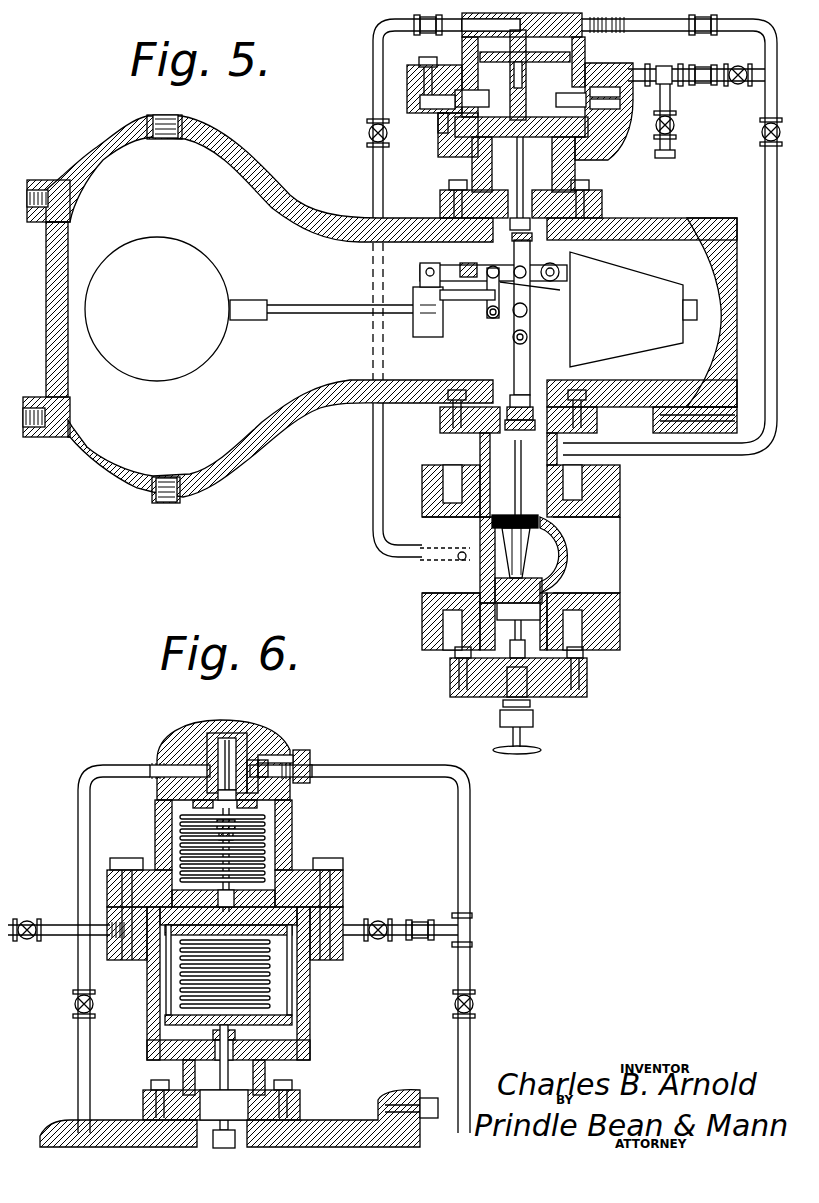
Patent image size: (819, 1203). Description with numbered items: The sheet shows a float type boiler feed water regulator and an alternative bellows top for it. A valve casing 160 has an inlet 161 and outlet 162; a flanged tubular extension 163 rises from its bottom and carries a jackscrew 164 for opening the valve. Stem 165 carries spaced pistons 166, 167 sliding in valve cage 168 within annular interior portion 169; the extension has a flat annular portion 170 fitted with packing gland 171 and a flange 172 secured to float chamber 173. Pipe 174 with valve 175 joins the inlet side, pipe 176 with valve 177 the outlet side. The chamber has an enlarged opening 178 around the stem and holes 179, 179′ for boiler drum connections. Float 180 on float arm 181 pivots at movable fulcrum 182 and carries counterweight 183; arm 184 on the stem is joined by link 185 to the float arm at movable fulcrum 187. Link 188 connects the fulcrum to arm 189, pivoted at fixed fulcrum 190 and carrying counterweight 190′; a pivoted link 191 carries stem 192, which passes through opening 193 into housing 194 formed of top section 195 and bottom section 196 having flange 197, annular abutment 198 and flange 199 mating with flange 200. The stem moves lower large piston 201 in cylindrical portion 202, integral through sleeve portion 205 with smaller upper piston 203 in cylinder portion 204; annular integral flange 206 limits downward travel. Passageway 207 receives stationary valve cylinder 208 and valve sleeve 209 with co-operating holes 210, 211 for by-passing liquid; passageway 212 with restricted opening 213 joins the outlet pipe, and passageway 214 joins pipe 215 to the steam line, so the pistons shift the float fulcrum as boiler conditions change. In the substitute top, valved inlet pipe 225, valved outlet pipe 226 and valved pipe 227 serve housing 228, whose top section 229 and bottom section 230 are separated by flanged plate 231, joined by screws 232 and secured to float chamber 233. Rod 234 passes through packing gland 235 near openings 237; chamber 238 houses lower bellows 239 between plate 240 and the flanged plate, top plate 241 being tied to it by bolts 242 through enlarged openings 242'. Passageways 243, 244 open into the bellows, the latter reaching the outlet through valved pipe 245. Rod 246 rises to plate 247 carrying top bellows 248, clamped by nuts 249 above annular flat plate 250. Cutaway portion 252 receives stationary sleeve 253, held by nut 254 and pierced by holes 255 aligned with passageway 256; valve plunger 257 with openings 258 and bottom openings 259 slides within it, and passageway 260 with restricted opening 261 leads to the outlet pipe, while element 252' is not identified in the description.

In FIG. 5, the valve casing 160 is at (614, 484).
In FIG. 5, the inlet 161 is at (432, 530).
In FIG. 5, the outlet 162 is at (608, 531).
In FIG. 5, the flanged tubular extension 163 is at (480, 452).
In FIG. 5, the jackscrew 164 is at (533, 716).
In FIG. 5, the stem 165 is at (450, 474).
In FIG. 5, the piston 166 is at (515, 342).
In FIG. 5, the piston 167 is at (503, 566).
In FIG. 5, the valve cage 168 is at (530, 592).
In FIG. 5, the annular interior portion 169 is at (568, 551).
In FIG. 5, the flat annular portion 170 is at (522, 462).
In FIG. 5, the packing gland 171 is at (505, 425).
In FIG. 5, the flange 172 is at (505, 414).
In FIG. 5, the float chamber 173 is at (258, 468).
In FIG. 5, the pipe 174 is at (374, 503).
In FIG. 5, the valve 175 is at (366, 133).
In FIG. 5, the pipe 176 is at (668, 25).
In FIG. 5, the valve 177 is at (772, 146).
In FIG. 5, the enlarged opening 178 is at (497, 390).
In FIG. 5, the hole 179 is at (172, 118).
In FIG. 5, the hole 179′ is at (162, 503).
In FIG. 5, the float 180 is at (152, 240).
In FIG. 5, the float arm 181 is at (303, 316).
In FIG. 5, the movable fulcrum 182 is at (485, 318).
In FIG. 5, the counterweight 183 is at (640, 280).
In FIG. 5, the arm 184 is at (530, 355).
In FIG. 5, the link 185 is at (530, 323).
In FIG. 5, the movable fulcrum 187 is at (491, 266).
In FIG. 5, the link 188 is at (490, 292).
In FIG. 5, the arm 189 is at (450, 266).
In FIG. 5, the fixed fulcrum 190 is at (560, 282).
In FIG. 5, the counterweight 190′ is at (420, 330).
In FIG. 5, the pivoted link 191 is at (562, 270).
In FIG. 5, the stem 192 is at (517, 156).
In FIG. 5, the opening 193 is at (516, 230).
In FIG. 5, the housing 194 is at (612, 160).
In FIG. 5, the top section 195 is at (392, 27).
In FIG. 5, the bottom section 196 is at (440, 118).
In FIG. 5, the flange 197 is at (442, 200).
In FIG. 5, the annular abutment 198 is at (575, 237).
In FIG. 5, the flange 199 is at (420, 102).
In FIG. 5, the flange 200 is at (410, 76).
In FIG. 5, the lower large piston 201 is at (598, 150).
In FIG. 5, the cylindrical portion 202 is at (450, 148).
In FIG. 5, the smaller upper piston 203 is at (586, 70).
In FIG. 5, the cylinder portion 204 is at (586, 62).
In FIG. 5, the integral sleeve portion 205 is at (590, 112).
In FIG. 5, the annular integral flange 206 is at (449, 182).
In FIG. 5, the passageway 207 is at (490, 24).
In FIG. 5, the stationary valve cylinder 208 is at (522, 28).
In FIG. 5, the valve sleeve 209 is at (490, 55).
In FIG. 5, the hole 210 is at (590, 128).
In FIG. 5, the hole 211 is at (512, 95).
In FIG. 5, the passageway 212 is at (592, 21).
In FIG. 5, the restricted opening 213 is at (612, 23).
In FIG. 5, the passageway 214 is at (652, 70).
In FIG. 5, the pipe 215 is at (680, 90).
In FIG. 6, the valved inlet pipe 225 is at (78, 838).
In FIG. 6, the valved outlet pipe 226 is at (472, 842).
In FIG. 6, the valved pipe 227 is at (55, 938).
In FIG. 6, the housing 228 is at (310, 840).
In FIG. 6, the top section 229 is at (300, 868).
In FIG. 6, the bottom section 230 is at (305, 1019).
In FIG. 6, the flanged plate 231 is at (345, 909).
In FIG. 6, the screws 232 is at (340, 865).
In FIG. 6, the float chamber 233 is at (330, 1135).
In FIG. 6, the rod 234 is at (230, 1071).
In FIG. 6, the packing gland 235 is at (236, 1140).
In FIG. 6, the openings 237 is at (185, 1074).
In FIG. 6, the chamber 238 is at (300, 1049).
In FIG. 6, the lower bellows 239 is at (272, 984).
In FIG. 6, the plate 240 is at (213, 1036).
In FIG. 6, the top plate 241 is at (190, 929).
In FIG. 6, the bolts 242 is at (195, 1028).
In FIG. 6, the enlarged openings 242' is at (407, 944).
In FIG. 6, the passageway 243 is at (168, 984).
In FIG. 6, the passageway 244 is at (275, 935).
In FIG. 6, the valved pipe 245 is at (416, 942).
In FIG. 6, the rod 246 is at (210, 858).
In FIG. 6, the plate 247 is at (255, 828).
In FIG. 6, the top bellows 248 is at (268, 832).
In FIG. 6, the nuts 249 is at (220, 807).
In FIG. 6, the annular flat plate 250 is at (342, 879).
In FIG. 6, the cutaway portion 252 is at (177, 819).
In FIG. 6, the nut 252' is at (268, 767).
In FIG. 6, the stationary sleeve 253 is at (258, 770).
In FIG. 6, the nut 254 is at (270, 782).
In FIG. 6, the holes 255 is at (208, 758).
In FIG. 6, the passageway 256 is at (160, 766).
In FIG. 6, the movable valve plunger 257 is at (232, 768).
In FIG. 6, the openings 258 is at (222, 766).
In FIG. 6, the openings 259 is at (200, 799).
In FIG. 6, the passageway 260 is at (275, 758).
In FIG. 6, the restricted opening 261 is at (312, 779).